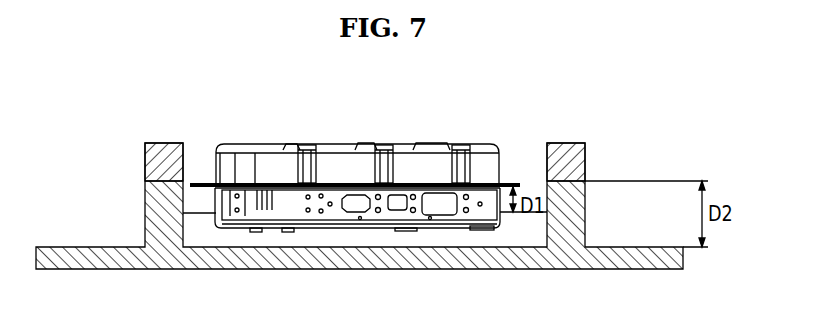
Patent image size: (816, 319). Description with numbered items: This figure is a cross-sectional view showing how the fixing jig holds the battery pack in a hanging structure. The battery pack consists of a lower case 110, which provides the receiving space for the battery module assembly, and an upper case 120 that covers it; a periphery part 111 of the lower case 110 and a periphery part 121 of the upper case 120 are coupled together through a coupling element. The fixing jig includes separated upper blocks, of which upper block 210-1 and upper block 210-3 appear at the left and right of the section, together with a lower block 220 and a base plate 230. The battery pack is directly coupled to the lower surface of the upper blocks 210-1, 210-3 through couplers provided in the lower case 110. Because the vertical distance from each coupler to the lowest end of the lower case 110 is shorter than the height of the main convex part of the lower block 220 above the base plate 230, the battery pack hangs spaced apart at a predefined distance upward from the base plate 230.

The lower case 110 is at (375, 286).
The periphery part of the lower case 111 is at (493, 286).
The upper case 120 is at (380, 144).
The periphery part of the upper case 121 is at (508, 183).
The upper block 210-1 is at (145, 157).
The upper block 210-3 is at (610, 158).
The lower block 220 is at (610, 212).
The base plate 230 is at (635, 290).